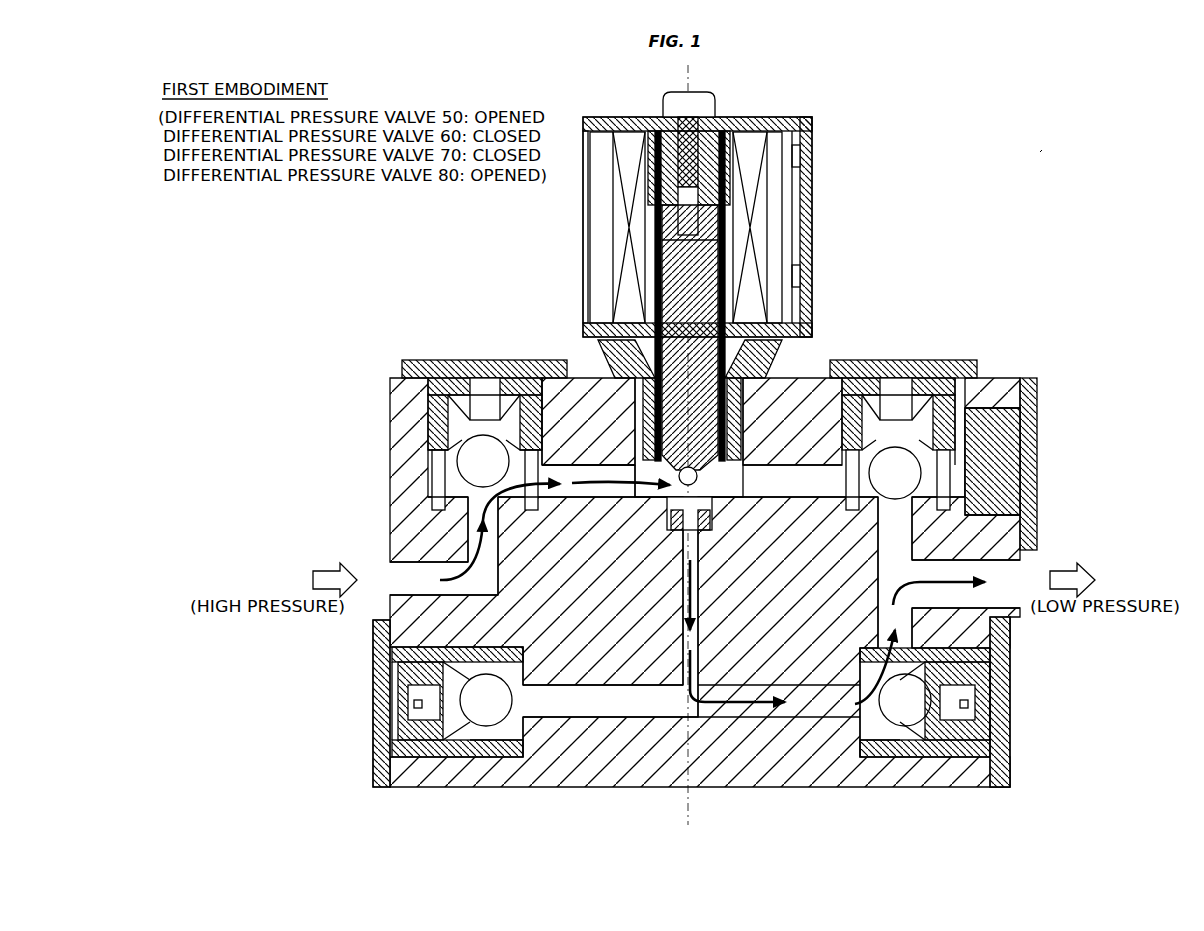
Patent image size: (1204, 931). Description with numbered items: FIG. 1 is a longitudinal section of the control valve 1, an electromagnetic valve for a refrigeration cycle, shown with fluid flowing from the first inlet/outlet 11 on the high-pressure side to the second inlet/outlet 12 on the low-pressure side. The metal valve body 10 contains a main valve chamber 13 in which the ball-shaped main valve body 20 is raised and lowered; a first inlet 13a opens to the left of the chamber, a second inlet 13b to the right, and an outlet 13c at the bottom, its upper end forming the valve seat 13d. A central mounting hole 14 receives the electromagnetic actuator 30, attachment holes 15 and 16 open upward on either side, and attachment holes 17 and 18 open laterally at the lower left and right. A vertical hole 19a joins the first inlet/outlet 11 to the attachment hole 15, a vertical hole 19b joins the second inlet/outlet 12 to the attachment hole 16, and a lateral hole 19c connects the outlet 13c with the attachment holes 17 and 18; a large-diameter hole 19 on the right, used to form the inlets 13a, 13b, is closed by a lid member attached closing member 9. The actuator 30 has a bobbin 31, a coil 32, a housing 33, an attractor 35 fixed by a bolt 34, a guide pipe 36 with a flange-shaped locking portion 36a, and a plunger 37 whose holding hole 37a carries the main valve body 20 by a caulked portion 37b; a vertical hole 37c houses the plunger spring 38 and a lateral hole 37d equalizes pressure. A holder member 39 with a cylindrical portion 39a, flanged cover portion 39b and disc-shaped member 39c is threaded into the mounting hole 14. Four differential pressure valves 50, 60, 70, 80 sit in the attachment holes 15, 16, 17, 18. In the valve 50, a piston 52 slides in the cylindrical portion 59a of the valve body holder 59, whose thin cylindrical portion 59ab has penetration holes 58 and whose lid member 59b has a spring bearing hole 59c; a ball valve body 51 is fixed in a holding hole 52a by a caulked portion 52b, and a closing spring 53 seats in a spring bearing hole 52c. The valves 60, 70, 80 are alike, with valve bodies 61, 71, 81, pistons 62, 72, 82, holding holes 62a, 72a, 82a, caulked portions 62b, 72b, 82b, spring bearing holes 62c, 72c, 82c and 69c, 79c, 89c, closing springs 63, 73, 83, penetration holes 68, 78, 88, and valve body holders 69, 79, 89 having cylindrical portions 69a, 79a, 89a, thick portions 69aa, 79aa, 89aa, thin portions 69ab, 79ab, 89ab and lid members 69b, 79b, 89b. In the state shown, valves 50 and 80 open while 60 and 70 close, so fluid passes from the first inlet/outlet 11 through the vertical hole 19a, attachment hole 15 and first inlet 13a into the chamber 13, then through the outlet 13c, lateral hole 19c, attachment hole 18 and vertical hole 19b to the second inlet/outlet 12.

The control valve 1 is at (1040, 152).
The lid member attached closing member 9 is at (1037, 498).
The valve body 10 is at (390, 378).
The first inlet/outlet 11 is at (391, 576).
The second inlet/outlet 12 is at (1030, 568).
The main valve chamber 13 is at (746, 466).
The first inlet 13a is at (598, 500).
The second inlet 13b is at (790, 500).
The outlet 13c is at (706, 532).
The valve seat 13d is at (680, 532).
The mounting hole 14 is at (662, 500).
The attachment hole 15 is at (445, 472).
The attachment hole 16 is at (1037, 481).
The attachment hole 17 is at (492, 758).
The attachment hole 18 is at (895, 758).
The large-diameter hole 19 is at (1037, 421).
The vertical hole 19a is at (498, 565).
The vertical hole 19b is at (878, 592).
The lateral hole 19c is at (698, 645).
The main valve body 20 is at (735, 495).
The electromagnetic actuator 30 is at (812, 158).
The bobbin 31 is at (610, 118).
The coil 32 is at (612, 192).
The housing 33 is at (640, 117).
The bolt 34 is at (704, 102).
The attractor 35 is at (740, 117).
The guide pipe 36 is at (731, 188).
The flange-shaped locking portion 36a is at (640, 486).
The plunger 37 is at (660, 280).
The holding hole 37a is at (738, 420).
The caulked portion 37b is at (700, 476).
The vertical hole 37c is at (652, 222).
The lateral hole 37d is at (727, 236).
The plunger spring 38 is at (660, 246).
The holder member 39 is at (790, 362).
The cylindrical portion 39a is at (600, 356).
The flanged cover portion 39b is at (753, 359).
The disc-shaped member 39c is at (800, 306).
The differential pressure valve 50 is at (404, 360).
The valve body 51 is at (543, 378).
The piston 52 is at (402, 372).
The holding hole 52a is at (428, 442).
The caulked portion 52b is at (430, 493).
The spring bearing hole 52c is at (500, 380).
The closing spring 53 is at (478, 440).
The penetration holes 58 is at (432, 500).
The valve body holder 59 is at (446, 378).
The cylindrical portion 59a is at (438, 422).
The thin cylindrical portion 59ab is at (445, 512).
The lid member 59b is at (484, 407).
The spring bearing hole 59c is at (487, 395).
The differential pressure valve 60 is at (976, 362).
The valve body 61 is at (908, 496).
The piston 62 is at (985, 376).
The holding hole 62a is at (846, 446).
The caulked portion 62b is at (880, 522).
The spring bearing hole 62c is at (1037, 446).
The closing spring 63 is at (910, 378).
The penetration holes 68 is at (1037, 516).
The valve body holder 69 is at (936, 378).
The cylindrical portion 69a is at (1037, 464).
The thick cylindrical portion 69aa is at (992, 461).
The thin cylindrical portion 69ab is at (1037, 536).
The lid member 69b is at (897, 407).
The spring bearing hole 69c is at (893, 378).
The differential pressure valve 70 is at (360, 790).
The valve body 71 is at (504, 690).
The piston 72 is at (405, 760).
The holding hole 72a is at (436, 760).
The caulked portion 72b is at (518, 735).
The spring bearing hole 72c is at (406, 692).
The closing spring 73 is at (396, 722).
The penetration holes 78 is at (462, 758).
The valve body holder 79 is at (378, 746).
The cylindrical portion 79a is at (380, 656).
The thick cylindrical portion 79aa is at (457, 654).
The thin cylindrical portion 79ab is at (515, 758).
The lid member 79b is at (381, 703).
The spring bearing hole 79c is at (392, 710).
The differential pressure valve 80 is at (1020, 790).
The valve body 81 is at (870, 700).
The piston 82 is at (985, 758).
The holding hole 82a is at (950, 758).
The caulked portion 82b is at (856, 712).
The spring bearing hole 82c is at (992, 690).
The closing spring 83 is at (985, 722).
The penetration holes 88 is at (920, 758).
The valve body holder 89 is at (1010, 746).
The cylindrical portion 89a is at (1010, 656).
The thick cylindrical portion 89aa is at (925, 655).
The thin cylindrical portion 89ab is at (876, 760).
The lid member 89b is at (1000, 702).
The spring bearing hole 89c is at (1000, 708).